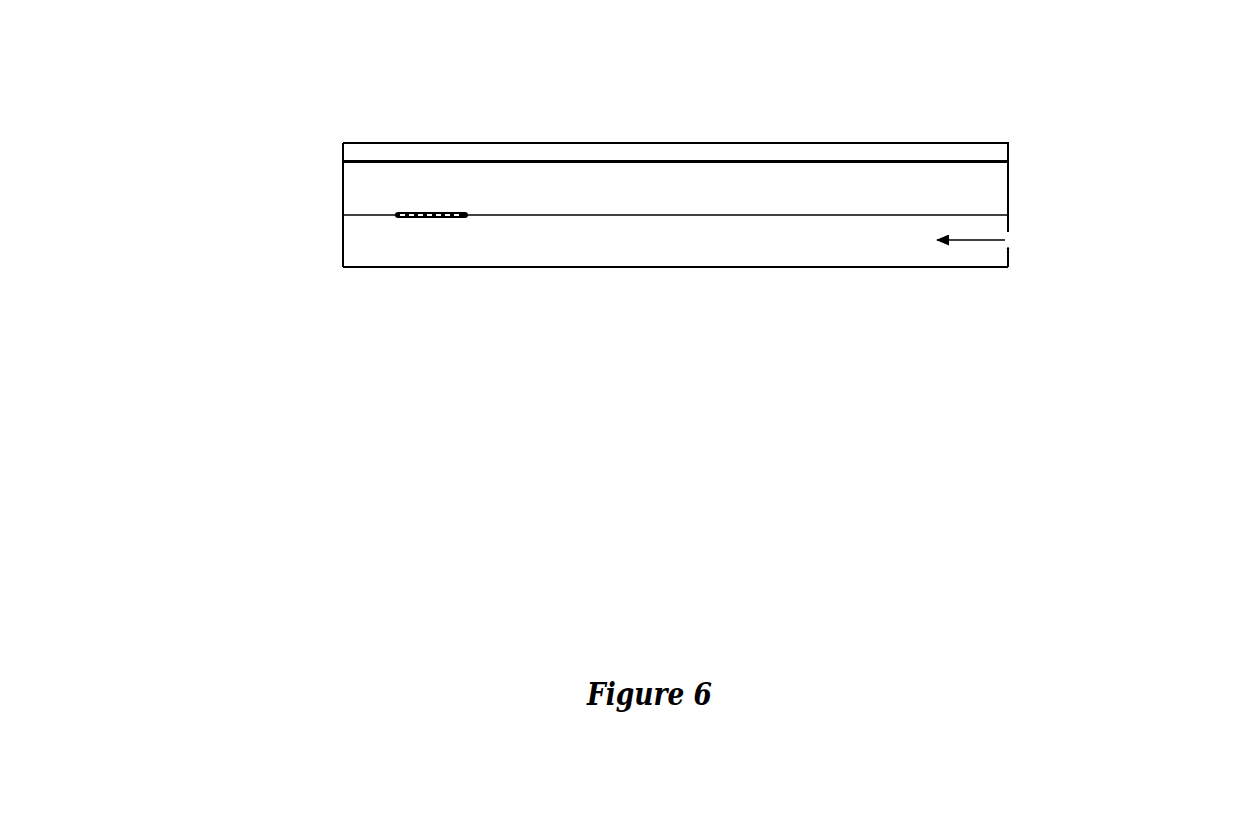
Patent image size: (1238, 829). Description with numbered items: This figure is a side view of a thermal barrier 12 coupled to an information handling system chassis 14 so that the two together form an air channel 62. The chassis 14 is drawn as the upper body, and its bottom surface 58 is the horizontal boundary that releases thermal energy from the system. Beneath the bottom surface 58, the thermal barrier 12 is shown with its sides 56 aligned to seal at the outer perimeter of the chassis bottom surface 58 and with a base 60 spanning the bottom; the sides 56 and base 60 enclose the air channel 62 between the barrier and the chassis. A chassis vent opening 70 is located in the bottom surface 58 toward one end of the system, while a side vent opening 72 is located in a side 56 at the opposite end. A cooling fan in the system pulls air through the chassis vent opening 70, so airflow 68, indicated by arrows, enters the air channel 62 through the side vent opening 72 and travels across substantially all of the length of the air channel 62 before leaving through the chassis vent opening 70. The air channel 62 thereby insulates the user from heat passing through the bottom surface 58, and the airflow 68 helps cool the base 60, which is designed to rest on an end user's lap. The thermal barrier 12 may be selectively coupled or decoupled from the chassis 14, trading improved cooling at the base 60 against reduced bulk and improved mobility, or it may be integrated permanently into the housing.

The thermal barrier 12 is at (341, 229).
The information handling system chassis 14 is at (1012, 186).
The sides 56 is at (341, 266).
The bottom surface 58 is at (863, 213).
The base 60 is at (407, 271).
The air channel 62 is at (428, 224).
The airflow 68 is at (1018, 240).
The chassis vent opening 70 is at (446, 200).
The side vent opening 72 is at (1013, 259).